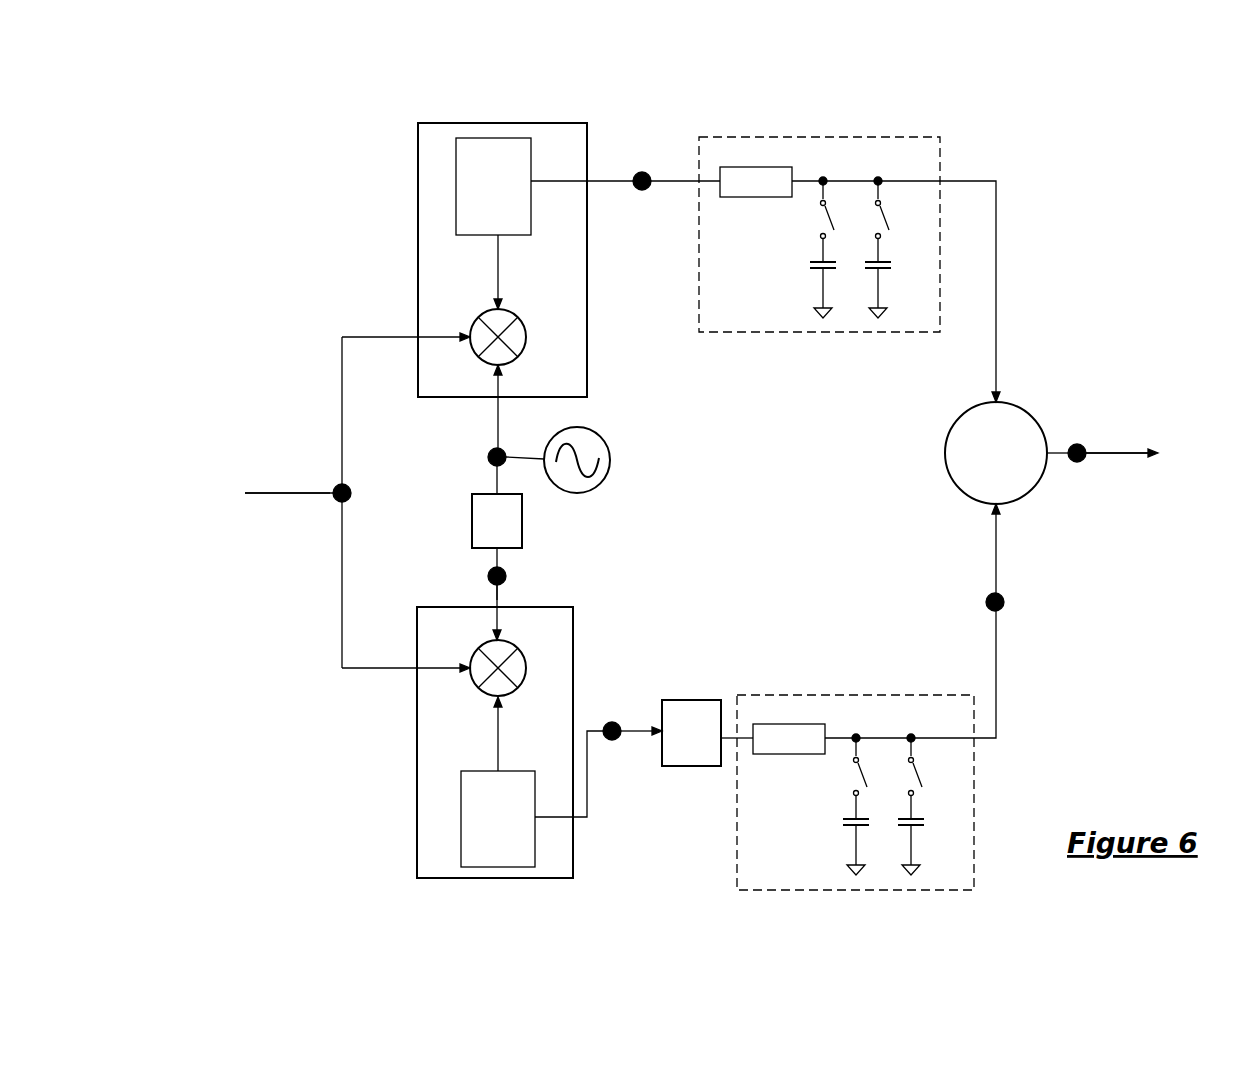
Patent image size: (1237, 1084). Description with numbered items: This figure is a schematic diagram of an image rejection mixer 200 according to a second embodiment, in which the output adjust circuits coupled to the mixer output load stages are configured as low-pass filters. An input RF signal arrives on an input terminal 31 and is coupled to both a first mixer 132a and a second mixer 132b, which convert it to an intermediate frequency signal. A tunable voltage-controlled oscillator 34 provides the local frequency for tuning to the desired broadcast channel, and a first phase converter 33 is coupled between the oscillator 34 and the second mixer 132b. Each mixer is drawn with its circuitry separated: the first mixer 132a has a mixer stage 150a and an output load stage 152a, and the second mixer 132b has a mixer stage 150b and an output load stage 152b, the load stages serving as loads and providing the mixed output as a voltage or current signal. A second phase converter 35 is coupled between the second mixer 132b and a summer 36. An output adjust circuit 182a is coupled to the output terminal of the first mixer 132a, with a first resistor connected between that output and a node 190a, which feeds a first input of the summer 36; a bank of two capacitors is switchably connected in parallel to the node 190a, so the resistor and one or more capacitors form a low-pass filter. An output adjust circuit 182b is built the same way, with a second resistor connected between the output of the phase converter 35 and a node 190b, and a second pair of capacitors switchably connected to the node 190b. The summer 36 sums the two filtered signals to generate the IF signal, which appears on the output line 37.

The input terminal 31 is at (300, 494).
The first phase converter 33 is at (472, 512).
The tunable voltage-controlled oscillator 34 is at (606, 442).
The second phase converter 35 is at (688, 700).
The summer 36 is at (1032, 412).
The IF signal output line 37 is at (1130, 455).
The first mixer 132a is at (418, 202).
The second mixer 132b is at (417, 752).
The mixer stage 150a is at (524, 345).
The mixer stage 150b is at (518, 688).
The output load stage 152a is at (524, 238).
The output load stage 152b is at (512, 771).
The output adjust circuit 182a is at (748, 333).
The output adjust circuit 182b is at (830, 695).
The node 190a is at (880, 180).
The node 190b is at (912, 737).
The image reject receiver 200 is at (1041, 165).